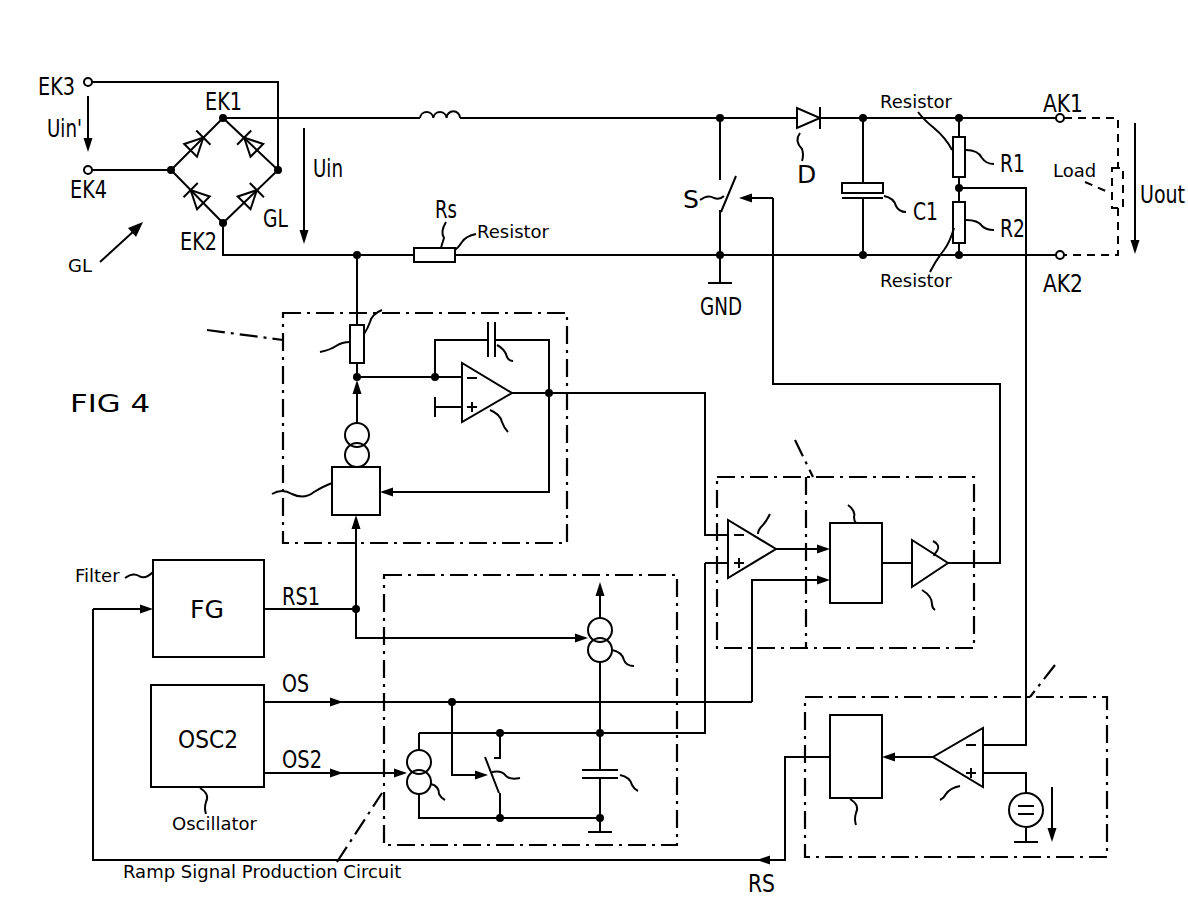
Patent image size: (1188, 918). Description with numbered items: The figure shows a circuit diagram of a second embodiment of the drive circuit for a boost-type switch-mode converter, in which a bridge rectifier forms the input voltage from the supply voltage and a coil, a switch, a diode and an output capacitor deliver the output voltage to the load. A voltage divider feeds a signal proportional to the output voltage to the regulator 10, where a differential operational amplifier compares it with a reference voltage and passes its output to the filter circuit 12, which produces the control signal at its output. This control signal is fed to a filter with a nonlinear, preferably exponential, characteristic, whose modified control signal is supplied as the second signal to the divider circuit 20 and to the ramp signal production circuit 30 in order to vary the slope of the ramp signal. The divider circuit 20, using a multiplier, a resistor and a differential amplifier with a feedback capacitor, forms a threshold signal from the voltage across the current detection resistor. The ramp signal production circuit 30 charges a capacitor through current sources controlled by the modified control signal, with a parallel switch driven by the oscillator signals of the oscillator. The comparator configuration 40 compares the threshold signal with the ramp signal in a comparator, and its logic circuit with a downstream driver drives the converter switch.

The regulator 10 is at (986, 746).
The filter circuit 12 is at (869, 771).
The divider circuit 20 is at (568, 340).
The ramp signal production circuit 30 is at (678, 755).
The comparator configuration 40 is at (878, 477).